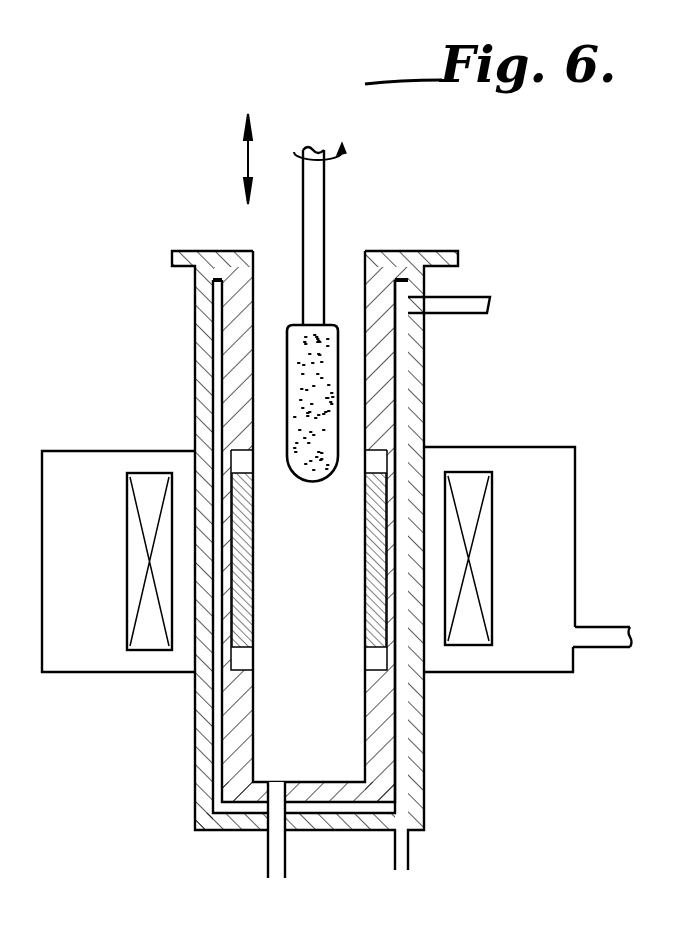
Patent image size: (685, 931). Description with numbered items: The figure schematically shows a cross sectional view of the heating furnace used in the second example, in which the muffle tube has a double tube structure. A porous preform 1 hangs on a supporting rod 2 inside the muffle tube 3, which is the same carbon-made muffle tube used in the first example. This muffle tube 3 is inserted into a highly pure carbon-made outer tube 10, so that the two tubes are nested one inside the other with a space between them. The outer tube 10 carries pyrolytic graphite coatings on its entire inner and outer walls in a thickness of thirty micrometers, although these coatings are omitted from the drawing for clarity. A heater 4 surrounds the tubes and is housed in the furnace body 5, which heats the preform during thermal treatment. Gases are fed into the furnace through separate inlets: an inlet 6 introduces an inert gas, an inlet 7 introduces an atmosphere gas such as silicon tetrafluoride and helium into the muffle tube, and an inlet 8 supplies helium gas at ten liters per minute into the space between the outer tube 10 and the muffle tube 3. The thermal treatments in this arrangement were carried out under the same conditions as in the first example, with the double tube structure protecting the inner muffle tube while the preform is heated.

The porous preform 1 is at (328, 432).
The supporting rod 2 is at (318, 215).
The muffle tube 3 is at (388, 378).
The heater 4 is at (476, 647).
The furnace body 5 is at (575, 447).
The inlet for introducing an inert gas 6 is at (602, 637).
The inlet for introducing an atmosphere gas 7 is at (268, 855).
The inlet 8 is at (410, 855).
The outer tube 10 is at (424, 772).